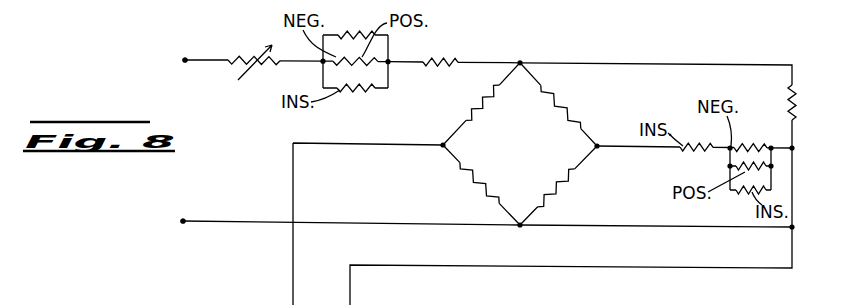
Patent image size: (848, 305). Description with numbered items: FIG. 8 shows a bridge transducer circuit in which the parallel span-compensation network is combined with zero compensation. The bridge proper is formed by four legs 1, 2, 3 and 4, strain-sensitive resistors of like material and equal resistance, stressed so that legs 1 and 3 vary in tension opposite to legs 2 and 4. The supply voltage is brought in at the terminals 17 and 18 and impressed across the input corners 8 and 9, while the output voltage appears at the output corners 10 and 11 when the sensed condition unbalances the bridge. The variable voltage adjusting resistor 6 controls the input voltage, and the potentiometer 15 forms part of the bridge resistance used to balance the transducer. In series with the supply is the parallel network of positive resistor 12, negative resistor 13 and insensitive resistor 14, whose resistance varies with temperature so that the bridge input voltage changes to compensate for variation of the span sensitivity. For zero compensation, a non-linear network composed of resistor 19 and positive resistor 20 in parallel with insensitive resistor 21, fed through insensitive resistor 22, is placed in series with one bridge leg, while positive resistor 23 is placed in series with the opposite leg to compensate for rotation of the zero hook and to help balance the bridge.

The bridge leg 1 is at (474, 94).
The bridge leg 2 is at (562, 100).
The bridge leg 3 is at (483, 184).
The bridge leg 4 is at (553, 183).
The variable resistor 6 is at (259, 50).
The input corner 8 is at (521, 62).
The input corner 9 is at (521, 226).
The output corner 10 is at (598, 144).
The output corner 11 is at (442, 143).
The positive resistor 12 is at (366, 33).
The negative resistor 13 is at (372, 56).
The insensitive resistor 14 is at (350, 90).
The potentiometer 15 is at (437, 55).
The supply terminal 17 is at (186, 59).
The supply terminal 18 is at (183, 222).
The temperature-insensitive resistor 19 is at (763, 142).
The positive resistor 20 is at (740, 165).
The insensitive resistor 21 is at (747, 194).
The insensitive resistor 22 is at (704, 142).
The positive resistor 23 is at (789, 99).